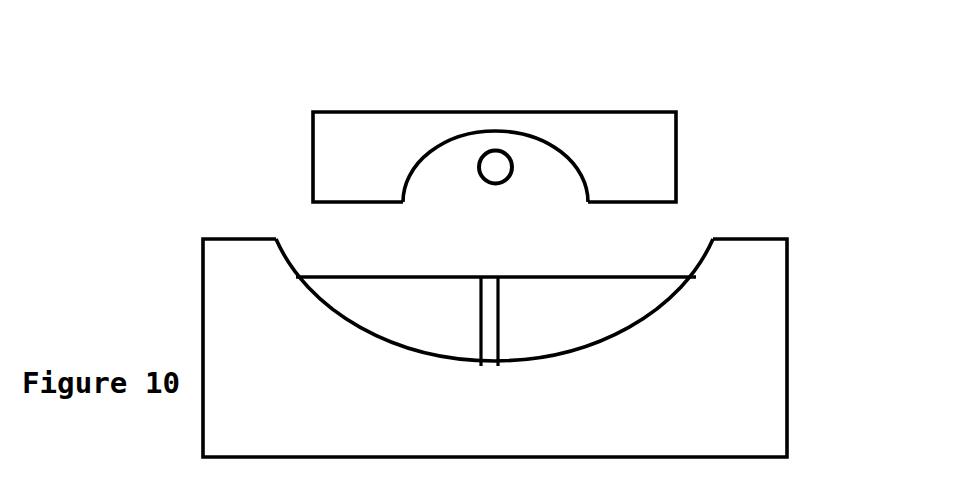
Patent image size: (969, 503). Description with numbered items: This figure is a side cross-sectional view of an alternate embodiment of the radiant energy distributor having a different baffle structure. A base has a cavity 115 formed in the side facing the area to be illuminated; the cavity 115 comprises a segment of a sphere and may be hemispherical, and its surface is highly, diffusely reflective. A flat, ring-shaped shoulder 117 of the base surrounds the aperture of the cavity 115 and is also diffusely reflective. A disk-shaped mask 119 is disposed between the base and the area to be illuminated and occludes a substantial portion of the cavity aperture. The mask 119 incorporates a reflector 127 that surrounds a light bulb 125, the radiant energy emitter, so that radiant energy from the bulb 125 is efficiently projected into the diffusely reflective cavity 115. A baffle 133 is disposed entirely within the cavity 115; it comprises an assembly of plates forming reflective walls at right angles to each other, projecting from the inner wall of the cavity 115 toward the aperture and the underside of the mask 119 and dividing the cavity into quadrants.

The cavity 115 is at (708, 260).
The shoulder 117 is at (788, 290).
The mask 119 is at (642, 112).
The light bulb 125 is at (513, 167).
The reflector 127 is at (477, 128).
The baffle 133 is at (628, 277).